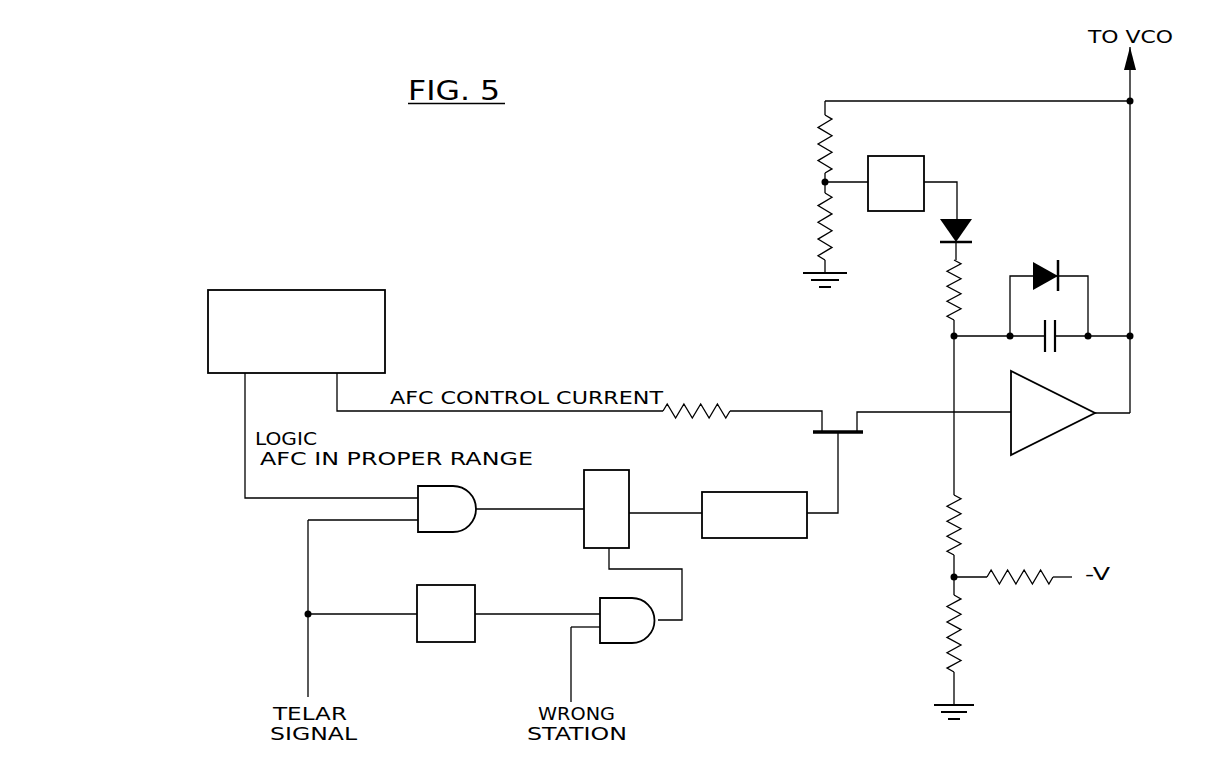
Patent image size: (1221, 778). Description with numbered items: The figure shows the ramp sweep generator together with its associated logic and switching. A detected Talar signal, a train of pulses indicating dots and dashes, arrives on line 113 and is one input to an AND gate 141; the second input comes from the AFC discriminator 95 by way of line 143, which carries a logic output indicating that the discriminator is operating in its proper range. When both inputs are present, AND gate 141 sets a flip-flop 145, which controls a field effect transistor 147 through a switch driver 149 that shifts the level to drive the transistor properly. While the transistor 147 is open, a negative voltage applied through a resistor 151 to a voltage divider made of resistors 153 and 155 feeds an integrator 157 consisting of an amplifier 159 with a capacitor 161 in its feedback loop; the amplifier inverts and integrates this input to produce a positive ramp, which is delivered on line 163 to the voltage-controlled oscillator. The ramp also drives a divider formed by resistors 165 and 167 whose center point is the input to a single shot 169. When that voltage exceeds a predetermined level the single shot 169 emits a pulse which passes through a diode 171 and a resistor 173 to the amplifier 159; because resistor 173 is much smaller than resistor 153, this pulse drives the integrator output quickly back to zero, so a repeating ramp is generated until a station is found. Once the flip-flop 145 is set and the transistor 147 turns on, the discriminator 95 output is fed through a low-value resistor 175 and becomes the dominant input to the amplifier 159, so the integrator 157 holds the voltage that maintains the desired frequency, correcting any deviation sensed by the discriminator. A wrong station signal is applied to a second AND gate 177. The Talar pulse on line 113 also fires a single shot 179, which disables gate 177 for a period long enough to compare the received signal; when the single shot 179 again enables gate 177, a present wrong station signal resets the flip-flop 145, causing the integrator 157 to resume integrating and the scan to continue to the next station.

The AFC discriminator 95 is at (337, 290).
The line 113 is at (307, 652).
The AND gate 141 is at (466, 528).
The line 143 is at (245, 450).
The flip-flop 145 is at (629, 487).
The field effect transistor 147 is at (848, 436).
The switch driver 149 is at (766, 538).
The resistor 151 is at (1020, 584).
The resistor 153 is at (960, 520).
The resistor 155 is at (949, 630).
The integrator 157 is at (1085, 433).
The amplifier 159 is at (1044, 440).
The capacitor 161 is at (1057, 345).
The line 163 is at (1130, 138).
The resistor 165 is at (825, 147).
The resistor 167 is at (818, 212).
The single shot 169 is at (897, 156).
The diode 171 is at (968, 224).
The resistor 173 is at (953, 288).
The resistor 175 is at (708, 415).
The AND gate 177 is at (645, 643).
The single shot 179 is at (465, 642).